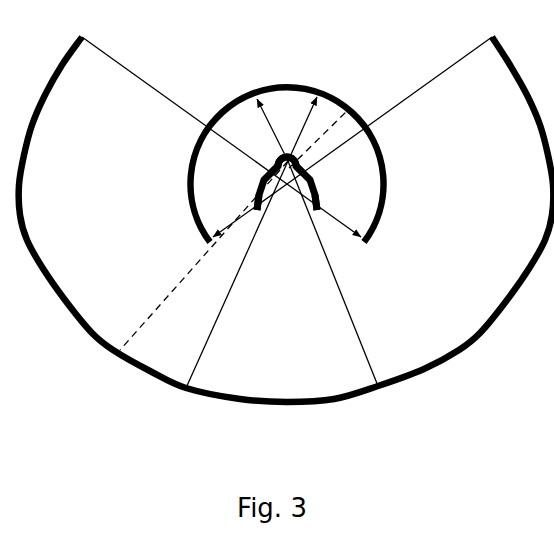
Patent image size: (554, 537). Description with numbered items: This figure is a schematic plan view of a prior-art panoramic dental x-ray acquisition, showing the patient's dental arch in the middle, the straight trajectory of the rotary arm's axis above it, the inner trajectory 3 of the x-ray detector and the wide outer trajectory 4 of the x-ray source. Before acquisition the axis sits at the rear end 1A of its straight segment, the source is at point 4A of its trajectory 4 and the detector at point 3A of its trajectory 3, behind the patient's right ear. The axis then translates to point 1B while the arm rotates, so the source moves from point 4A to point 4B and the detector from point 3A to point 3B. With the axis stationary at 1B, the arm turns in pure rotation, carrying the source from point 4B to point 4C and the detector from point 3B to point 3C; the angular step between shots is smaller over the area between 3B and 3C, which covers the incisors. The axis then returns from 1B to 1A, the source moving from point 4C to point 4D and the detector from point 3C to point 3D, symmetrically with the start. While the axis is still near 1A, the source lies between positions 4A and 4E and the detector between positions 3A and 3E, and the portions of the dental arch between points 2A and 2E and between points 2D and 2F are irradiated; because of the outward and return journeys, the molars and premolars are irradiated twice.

The rear end of the straight line segment 1A is at (289, 199).
The end of the axis trajectory 1B is at (290, 153).
The point on the dental arch 2A is at (322, 204).
The point on the dental arch 2D is at (257, 203).
The point on the dental arch 2E is at (307, 162).
The point on the dental arch 2F is at (275, 165).
The trajectory of the x-ray detector 3 is at (185, 161).
The starting point of the detector trajectory 3A is at (340, 222).
The point of the detector trajectory 3B is at (313, 115).
The point of the detector trajectory 3C is at (263, 116).
The end point of the detector trajectory 3D is at (231, 222).
The point of the detector trajectory 3E is at (333, 127).
The trajectory of the x-ray source 4 is at (494, 338).
The starting point of the source trajectory 4A is at (181, 110).
The point of the source trajectory 4B is at (228, 289).
The point of the source trajectory 4C is at (344, 289).
The end point of the source trajectory 4D is at (395, 110).
The point of the source trajectory 4E is at (192, 270).